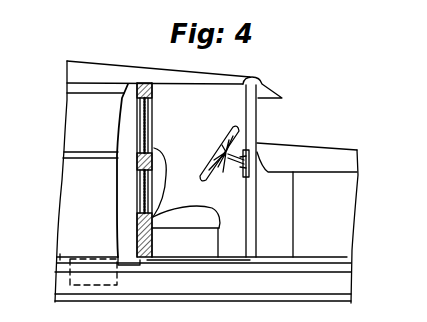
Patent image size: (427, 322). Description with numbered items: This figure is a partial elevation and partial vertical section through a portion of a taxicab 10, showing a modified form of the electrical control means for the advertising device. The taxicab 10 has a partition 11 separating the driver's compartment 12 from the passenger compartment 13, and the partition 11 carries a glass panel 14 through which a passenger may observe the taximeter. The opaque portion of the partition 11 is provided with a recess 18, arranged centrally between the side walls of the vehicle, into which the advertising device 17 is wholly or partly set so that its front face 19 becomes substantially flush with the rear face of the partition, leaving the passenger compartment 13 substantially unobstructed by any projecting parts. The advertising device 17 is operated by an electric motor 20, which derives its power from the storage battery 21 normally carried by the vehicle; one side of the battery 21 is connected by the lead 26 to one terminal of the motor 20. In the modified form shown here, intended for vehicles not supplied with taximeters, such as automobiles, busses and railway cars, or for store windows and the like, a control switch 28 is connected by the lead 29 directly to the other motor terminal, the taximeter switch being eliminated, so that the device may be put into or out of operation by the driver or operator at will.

The taxicab 10 is at (289, 141).
The partition 11 is at (153, 89).
The driver's compartment 12 is at (217, 98).
The passenger compartment 13 is at (128, 84).
The glass panel 14 is at (143, 117).
The advertising device 17 is at (138, 173).
The recess 18 is at (149, 183).
The front face 19 is at (140, 188).
The electric motor 20 is at (150, 196).
The storage battery 21 is at (70, 279).
The lead 26 is at (125, 264).
The control switch 28 is at (233, 170).
The lead 29 is at (204, 259).